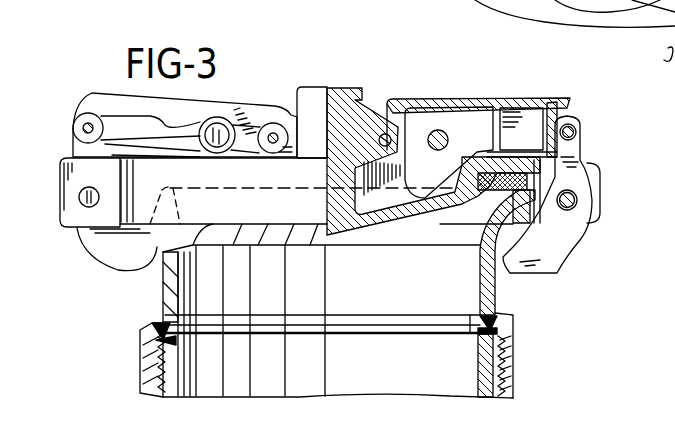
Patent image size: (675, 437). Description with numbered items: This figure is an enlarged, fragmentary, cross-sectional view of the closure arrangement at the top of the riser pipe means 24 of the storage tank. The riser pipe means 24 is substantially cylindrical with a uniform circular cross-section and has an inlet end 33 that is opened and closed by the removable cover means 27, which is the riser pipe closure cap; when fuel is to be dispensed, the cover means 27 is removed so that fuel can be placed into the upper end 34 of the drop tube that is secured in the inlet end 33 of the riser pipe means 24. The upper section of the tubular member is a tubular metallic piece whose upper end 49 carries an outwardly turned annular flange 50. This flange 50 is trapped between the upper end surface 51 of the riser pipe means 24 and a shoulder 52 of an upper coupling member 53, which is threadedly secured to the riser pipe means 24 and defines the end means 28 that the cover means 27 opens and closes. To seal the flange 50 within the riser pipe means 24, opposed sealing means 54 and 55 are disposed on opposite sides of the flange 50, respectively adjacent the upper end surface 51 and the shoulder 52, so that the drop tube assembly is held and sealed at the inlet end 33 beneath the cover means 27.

The riser pipe means 24 is at (500, 396).
The removable cover means 27 is at (341, 89).
The end means 28 is at (497, 292).
The inlet end 33 is at (514, 361).
The upper end of the drop tube 34 is at (376, 337).
The upper end of the upper section 49 is at (470, 356).
The annular flange 50 is at (505, 332).
The upper end surface of the riser pipe means 51 is at (159, 331).
The shoulder 52 is at (478, 331).
The upper coupling member 53 is at (483, 269).
The sealing means 54 is at (160, 358).
The sealing means 55 is at (164, 301).